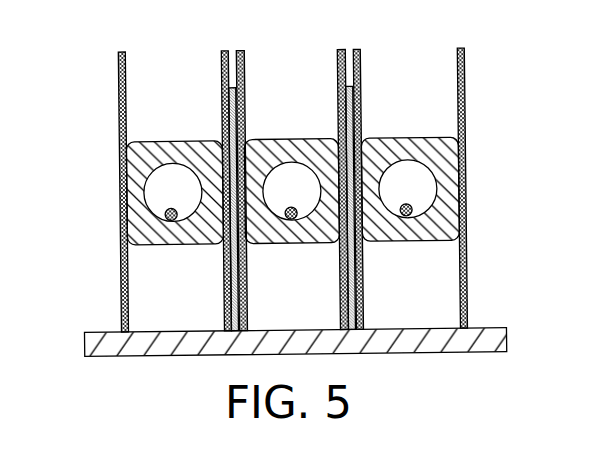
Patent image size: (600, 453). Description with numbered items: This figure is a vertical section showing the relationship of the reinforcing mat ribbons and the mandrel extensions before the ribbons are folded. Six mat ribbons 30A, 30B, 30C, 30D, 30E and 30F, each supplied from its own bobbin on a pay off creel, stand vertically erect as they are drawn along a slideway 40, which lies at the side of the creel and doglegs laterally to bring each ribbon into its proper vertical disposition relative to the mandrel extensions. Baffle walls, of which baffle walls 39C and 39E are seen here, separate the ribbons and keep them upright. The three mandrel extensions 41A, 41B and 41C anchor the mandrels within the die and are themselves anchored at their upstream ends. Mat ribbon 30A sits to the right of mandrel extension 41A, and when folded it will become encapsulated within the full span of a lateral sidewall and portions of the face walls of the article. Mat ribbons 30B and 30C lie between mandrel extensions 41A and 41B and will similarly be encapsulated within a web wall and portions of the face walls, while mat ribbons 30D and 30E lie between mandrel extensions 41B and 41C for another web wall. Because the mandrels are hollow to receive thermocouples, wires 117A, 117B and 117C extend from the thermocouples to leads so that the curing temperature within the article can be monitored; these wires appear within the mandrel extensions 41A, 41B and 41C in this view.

The mat ribbon 30A is at (466, 68).
The mat ribbon 30B is at (362, 65).
The mat ribbon 30C is at (339, 62).
The mat ribbon 30D is at (246, 68).
The mat ribbon 30E is at (223, 77).
The mat ribbon 30F is at (120, 72).
The baffle wall 39C is at (350, 87).
The baffle wall 39E is at (232, 87).
The slideway 40 is at (490, 329).
The mandrel extension 41A is at (404, 139).
The mandrel extension 41B is at (292, 139).
The mandrel extension 41C is at (175, 140).
The wire 117A is at (166, 211).
The wire 117B is at (293, 219).
The wire 117C is at (405, 217).